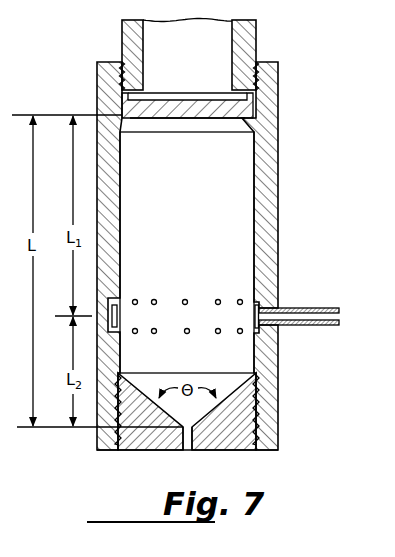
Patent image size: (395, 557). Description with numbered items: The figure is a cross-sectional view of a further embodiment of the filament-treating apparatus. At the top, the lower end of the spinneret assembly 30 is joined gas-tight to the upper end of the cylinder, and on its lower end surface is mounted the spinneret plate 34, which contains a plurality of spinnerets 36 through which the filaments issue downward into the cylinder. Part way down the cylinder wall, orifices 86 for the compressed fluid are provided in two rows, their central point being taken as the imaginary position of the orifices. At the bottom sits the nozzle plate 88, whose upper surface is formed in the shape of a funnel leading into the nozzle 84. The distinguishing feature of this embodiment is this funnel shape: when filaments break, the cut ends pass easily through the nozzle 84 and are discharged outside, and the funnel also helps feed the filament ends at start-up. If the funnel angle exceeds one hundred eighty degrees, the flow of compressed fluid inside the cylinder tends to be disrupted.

The spinneret assembly 30 is at (247, 41).
The spinneret plate 34 is at (250, 110).
The spinnerets 36 is at (218, 119).
The nozzle 84 is at (188, 450).
The orifices 86 is at (190, 329).
The nozzle plate 88 is at (237, 418).